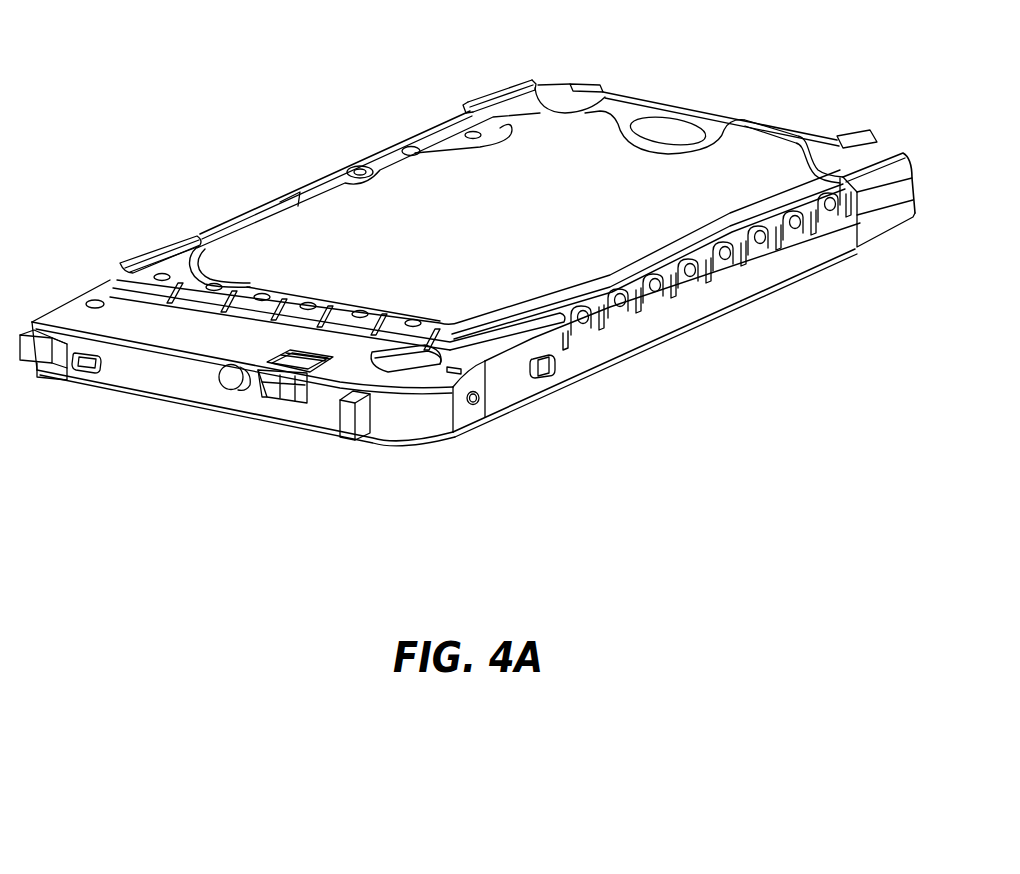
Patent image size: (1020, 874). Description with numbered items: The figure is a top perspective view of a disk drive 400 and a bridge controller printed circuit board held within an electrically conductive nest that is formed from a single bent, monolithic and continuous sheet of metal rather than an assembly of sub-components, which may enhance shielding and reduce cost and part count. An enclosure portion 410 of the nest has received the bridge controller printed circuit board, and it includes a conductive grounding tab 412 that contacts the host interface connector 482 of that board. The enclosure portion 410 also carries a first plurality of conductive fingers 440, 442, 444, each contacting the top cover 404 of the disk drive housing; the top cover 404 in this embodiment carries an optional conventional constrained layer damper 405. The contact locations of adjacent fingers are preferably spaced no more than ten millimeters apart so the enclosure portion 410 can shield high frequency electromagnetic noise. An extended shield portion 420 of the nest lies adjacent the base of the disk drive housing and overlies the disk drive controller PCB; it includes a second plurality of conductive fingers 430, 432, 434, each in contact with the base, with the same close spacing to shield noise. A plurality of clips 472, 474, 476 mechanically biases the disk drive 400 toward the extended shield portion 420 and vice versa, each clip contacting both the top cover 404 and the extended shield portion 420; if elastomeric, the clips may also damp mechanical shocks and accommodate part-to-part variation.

The disk drive 400 is at (667, 105).
The top cover 404 is at (448, 137).
The constrained layer damper 405 is at (763, 147).
The enclosure portion 410 is at (137, 372).
The conductive grounding tab 412 is at (302, 355).
The extended shield portion 420 is at (820, 253).
The conductive finger 430 is at (580, 324).
The conductive finger 432 is at (614, 307).
The conductive finger 434 is at (650, 293).
The conductive finger 440 is at (250, 297).
The conductive finger 442 is at (300, 300).
The conductive finger 444 is at (350, 310).
The clip 472 is at (873, 223).
The clip 474 is at (500, 97).
The clip 476 is at (160, 253).
The host interface connector 482 is at (280, 397).